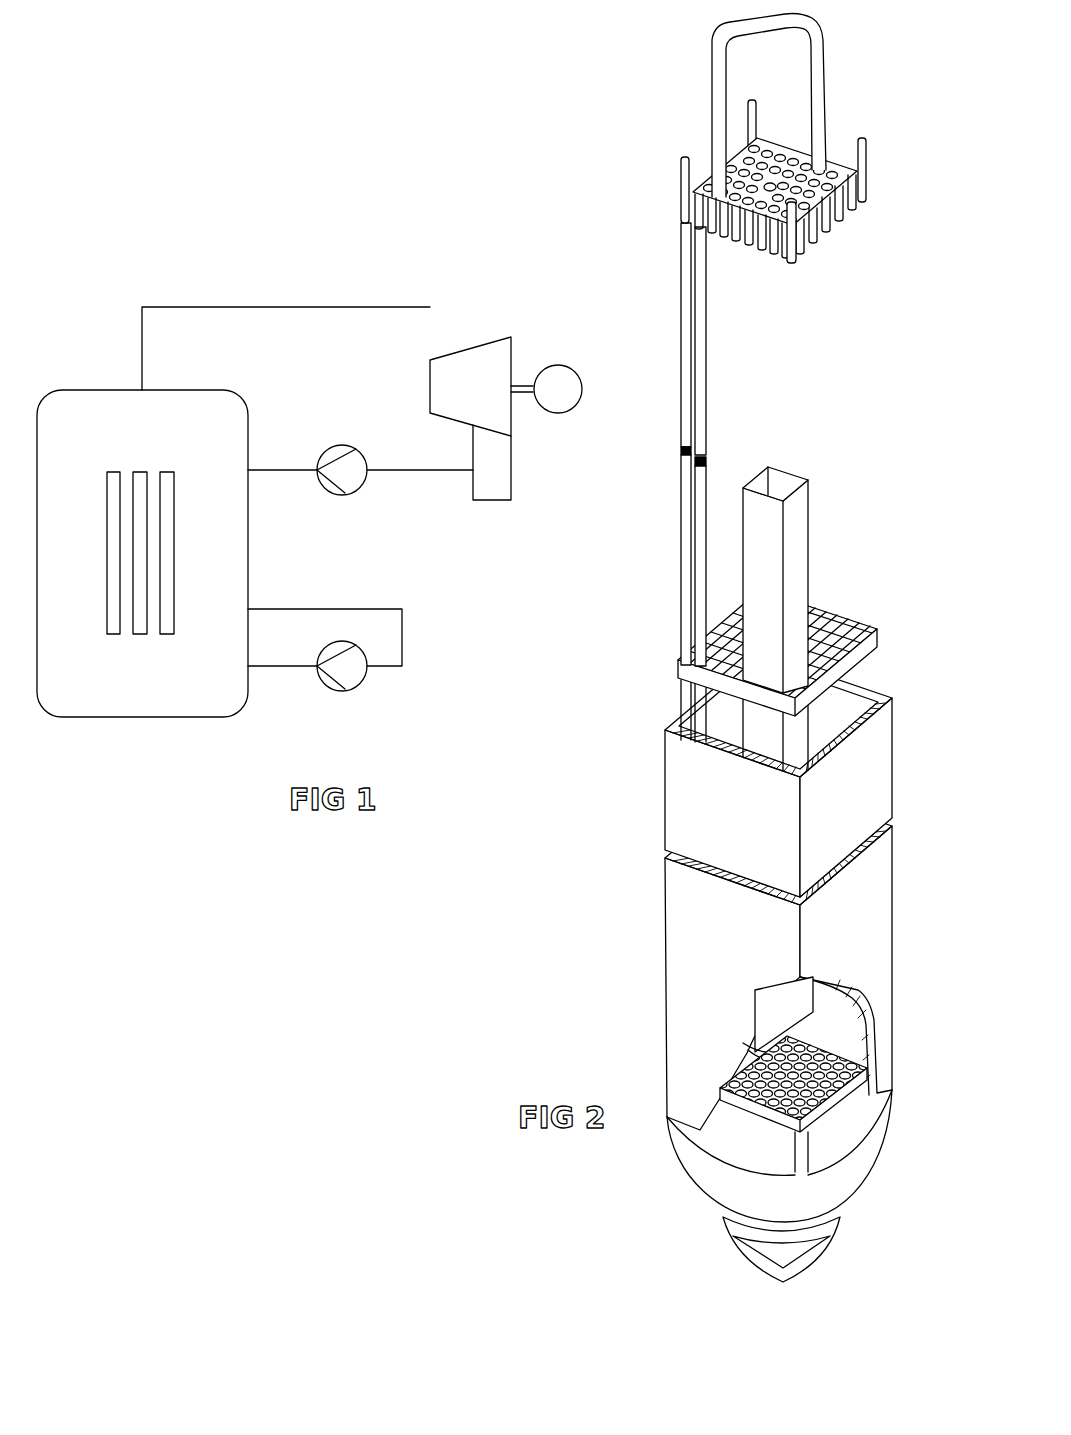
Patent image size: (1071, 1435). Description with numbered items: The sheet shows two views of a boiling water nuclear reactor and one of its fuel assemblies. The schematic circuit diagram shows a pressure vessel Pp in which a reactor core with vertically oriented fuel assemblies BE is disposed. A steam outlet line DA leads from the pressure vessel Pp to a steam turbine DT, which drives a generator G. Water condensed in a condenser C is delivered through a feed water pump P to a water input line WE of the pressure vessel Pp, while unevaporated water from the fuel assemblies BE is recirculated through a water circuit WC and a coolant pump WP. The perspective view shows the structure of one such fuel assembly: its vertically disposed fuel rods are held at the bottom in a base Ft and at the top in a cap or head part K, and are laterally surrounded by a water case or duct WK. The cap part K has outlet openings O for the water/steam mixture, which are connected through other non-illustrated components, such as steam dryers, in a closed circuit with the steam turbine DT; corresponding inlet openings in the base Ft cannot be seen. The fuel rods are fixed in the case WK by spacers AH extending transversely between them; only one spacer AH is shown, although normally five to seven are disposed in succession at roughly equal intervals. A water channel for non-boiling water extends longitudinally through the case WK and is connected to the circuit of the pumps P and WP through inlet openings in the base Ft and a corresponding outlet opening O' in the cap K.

In FIG. 1, the pressure vessel Pp is at (118, 718).
In FIG. 1, the fuel assemblies BE is at (170, 553).
In FIG. 1, the steam outlet line DA is at (302, 305).
In FIG. 1, the steam turbine DT is at (490, 340).
In FIG. 1, the generator G is at (566, 365).
In FIG. 1, the condenser C is at (500, 477).
In FIG. 1, the water input line WE is at (298, 468).
In FIG. 1, the feed water pump P is at (350, 446).
In FIG. 1, the water circuit WC is at (300, 608).
In FIG. 1, the coolant pump WP is at (355, 683).
In FIG. 2, the cap part K is at (705, 175).
In FIG. 2, the outlet openings O is at (778, 181).
In FIG. 2, the outlet opening O' is at (782, 246).
In FIG. 2, the spacer AH is at (700, 692).
In FIG. 2, the water case WK is at (720, 957).
In FIG. 2, the base Ft is at (728, 1192).